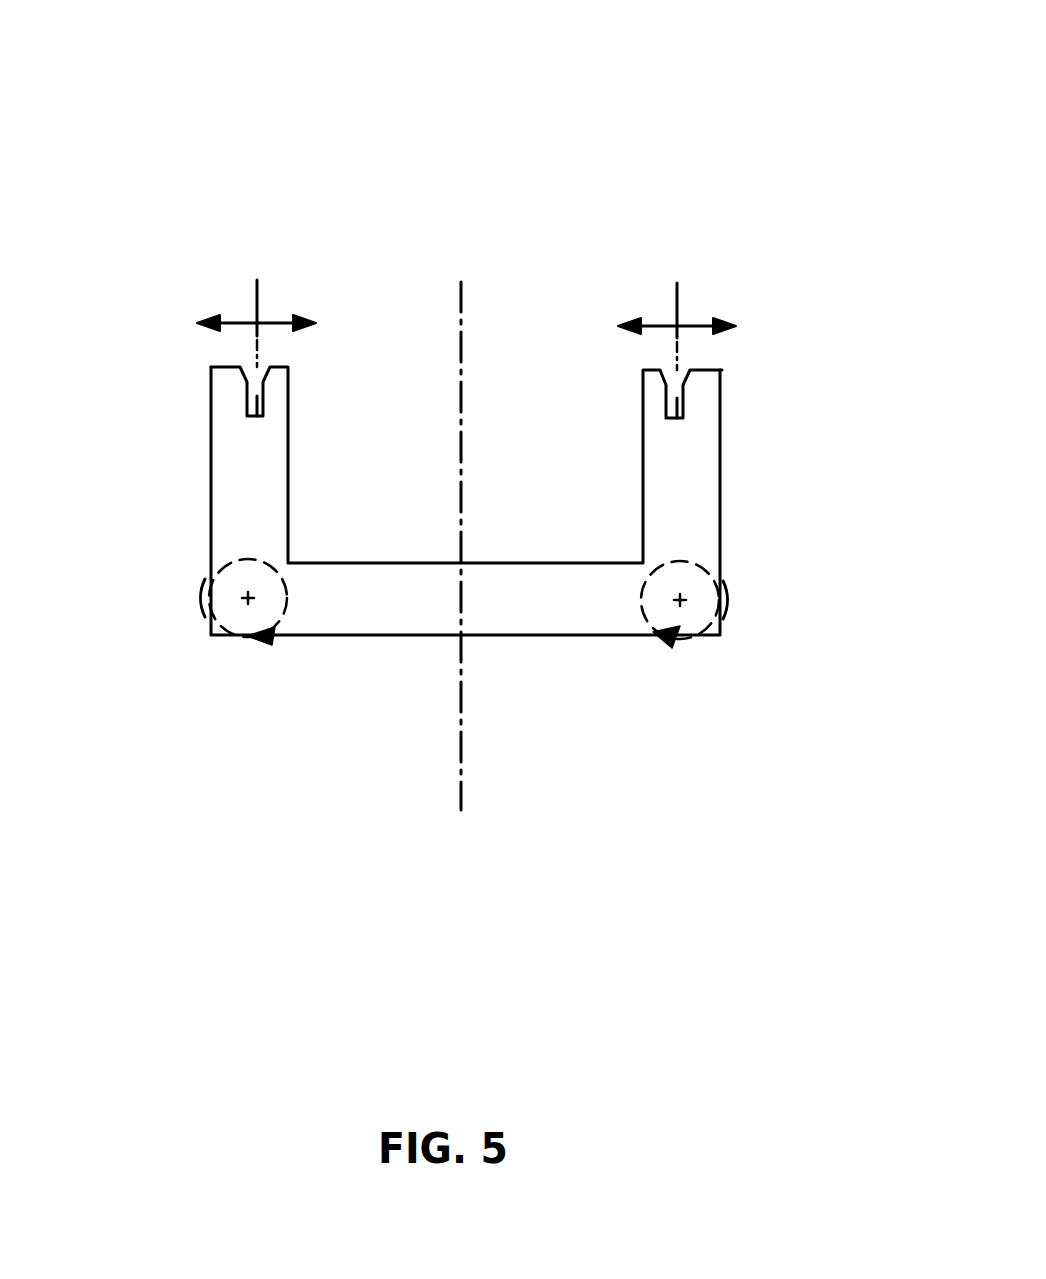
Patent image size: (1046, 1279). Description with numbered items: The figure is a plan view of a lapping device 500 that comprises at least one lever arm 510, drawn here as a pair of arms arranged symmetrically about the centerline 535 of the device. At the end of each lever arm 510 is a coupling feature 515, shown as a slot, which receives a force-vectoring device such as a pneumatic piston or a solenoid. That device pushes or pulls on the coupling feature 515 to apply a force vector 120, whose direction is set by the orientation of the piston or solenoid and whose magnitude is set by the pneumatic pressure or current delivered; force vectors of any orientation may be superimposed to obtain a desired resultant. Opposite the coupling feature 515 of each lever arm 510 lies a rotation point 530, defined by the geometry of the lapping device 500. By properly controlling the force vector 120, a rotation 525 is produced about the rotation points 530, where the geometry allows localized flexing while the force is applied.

The lapping device 500 is at (318, 168).
The force vector 120 is at (265, 322).
The coupling feature 515 is at (240, 392).
The lever arm 510 is at (228, 446).
The rotation 525 is at (255, 563).
The rotation point 530 is at (678, 606).
The centerline 535 is at (462, 749).